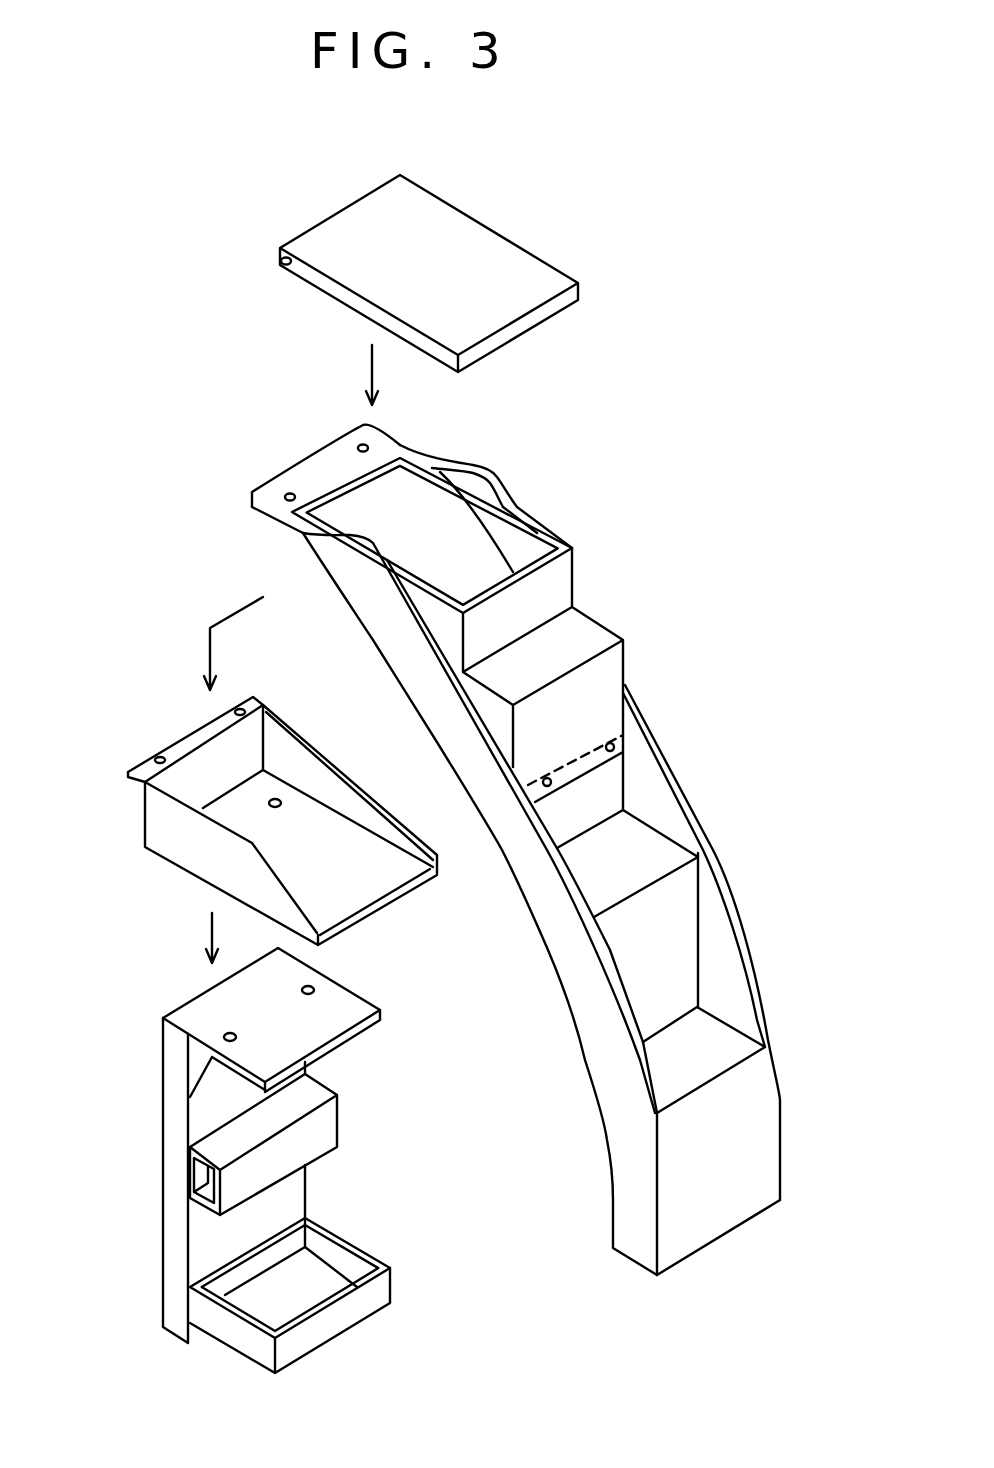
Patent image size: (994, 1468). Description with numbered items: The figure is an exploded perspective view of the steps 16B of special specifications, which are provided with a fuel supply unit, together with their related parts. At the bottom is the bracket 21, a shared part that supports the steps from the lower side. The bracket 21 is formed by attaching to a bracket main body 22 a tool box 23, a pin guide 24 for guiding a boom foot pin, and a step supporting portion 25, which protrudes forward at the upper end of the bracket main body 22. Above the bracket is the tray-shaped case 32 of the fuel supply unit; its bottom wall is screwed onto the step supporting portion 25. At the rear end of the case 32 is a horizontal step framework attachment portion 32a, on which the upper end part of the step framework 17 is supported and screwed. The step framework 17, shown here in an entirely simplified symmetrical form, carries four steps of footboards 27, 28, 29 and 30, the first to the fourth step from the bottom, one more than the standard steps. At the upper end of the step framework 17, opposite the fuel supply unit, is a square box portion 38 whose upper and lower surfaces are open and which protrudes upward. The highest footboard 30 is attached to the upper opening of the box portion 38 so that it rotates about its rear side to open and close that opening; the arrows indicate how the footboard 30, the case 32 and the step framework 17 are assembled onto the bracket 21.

The highest footboard 30 is at (485, 222).
The box portion 38 is at (540, 528).
The footboard 29 is at (585, 628).
The steps of special specifications 16B is at (664, 700).
The footboard 28 is at (650, 842).
The footboard 27 is at (717, 1030).
The step framework 17 is at (540, 930).
The step framework attachment portion 32a is at (180, 722).
The case 32 is at (263, 805).
The bracket 21 is at (247, 1167).
The bracket main body 22 is at (178, 1270).
The tool box 23 is at (330, 1330).
The pin guide 24 is at (305, 1155).
The step supporting portion 25 is at (350, 1038).